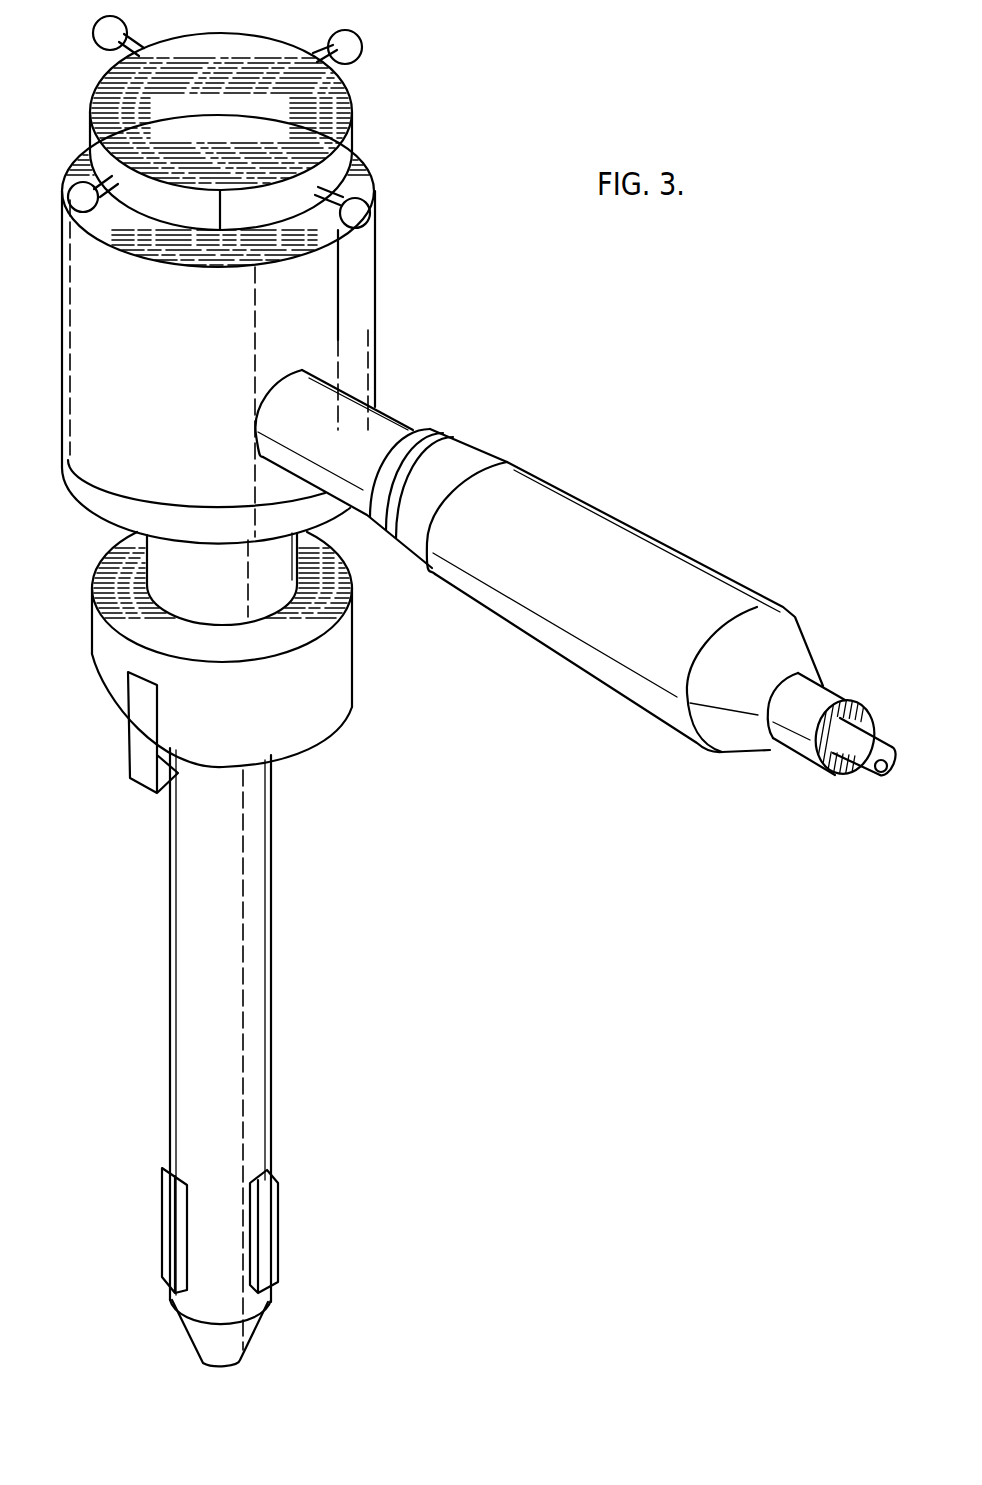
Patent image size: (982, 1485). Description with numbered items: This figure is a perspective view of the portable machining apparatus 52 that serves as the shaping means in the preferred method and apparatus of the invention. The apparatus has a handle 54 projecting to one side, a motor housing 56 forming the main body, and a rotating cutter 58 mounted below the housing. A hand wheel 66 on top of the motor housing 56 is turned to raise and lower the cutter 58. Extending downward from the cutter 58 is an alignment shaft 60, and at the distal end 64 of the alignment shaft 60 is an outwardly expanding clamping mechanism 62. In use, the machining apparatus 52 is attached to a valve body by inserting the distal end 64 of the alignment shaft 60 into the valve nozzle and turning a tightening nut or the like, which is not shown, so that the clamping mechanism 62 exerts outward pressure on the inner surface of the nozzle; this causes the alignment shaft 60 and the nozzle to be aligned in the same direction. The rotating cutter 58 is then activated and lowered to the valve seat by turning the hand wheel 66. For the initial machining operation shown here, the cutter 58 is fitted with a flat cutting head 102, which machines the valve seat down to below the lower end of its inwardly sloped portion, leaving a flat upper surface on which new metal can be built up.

The portable machining apparatus 52 is at (402, 322).
The handle 54 is at (590, 512).
The motor housing 56 is at (82, 313).
The rotating cutter 58 is at (94, 656).
The alignment shaft 60 is at (178, 992).
The outwardly expanding clamping mechanism 62 is at (280, 1237).
The distal end 64 is at (173, 1300).
The hand wheel 66 is at (350, 86).
The flat cutting head 102 is at (137, 765).